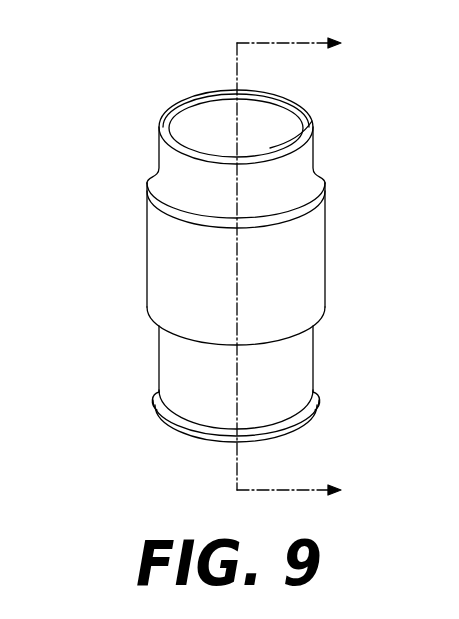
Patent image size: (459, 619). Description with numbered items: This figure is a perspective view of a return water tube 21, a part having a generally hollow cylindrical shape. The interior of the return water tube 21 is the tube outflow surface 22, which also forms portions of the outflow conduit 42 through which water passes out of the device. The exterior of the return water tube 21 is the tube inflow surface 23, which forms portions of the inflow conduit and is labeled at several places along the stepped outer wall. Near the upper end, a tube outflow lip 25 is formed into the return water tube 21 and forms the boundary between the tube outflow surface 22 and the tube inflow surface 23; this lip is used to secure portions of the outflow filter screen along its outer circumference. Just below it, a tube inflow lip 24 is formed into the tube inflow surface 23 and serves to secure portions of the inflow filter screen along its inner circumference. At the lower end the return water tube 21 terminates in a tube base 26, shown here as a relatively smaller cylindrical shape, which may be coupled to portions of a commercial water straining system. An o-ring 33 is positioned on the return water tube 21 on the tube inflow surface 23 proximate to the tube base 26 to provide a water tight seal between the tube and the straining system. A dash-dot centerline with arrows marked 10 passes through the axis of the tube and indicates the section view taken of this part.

The section line 10 is at (310, 266).
The return water tube 21 is at (207, 258).
The tube outflow surface 22 is at (193, 120).
The tube inflow surface 23 is at (296, 181).
The tube inflow lip 24 is at (146, 184).
The tube outflow lip 25 is at (160, 122).
The tube base 26 is at (213, 443).
The o-ring 33 is at (313, 412).
The outflow conduit 42 is at (312, 121).